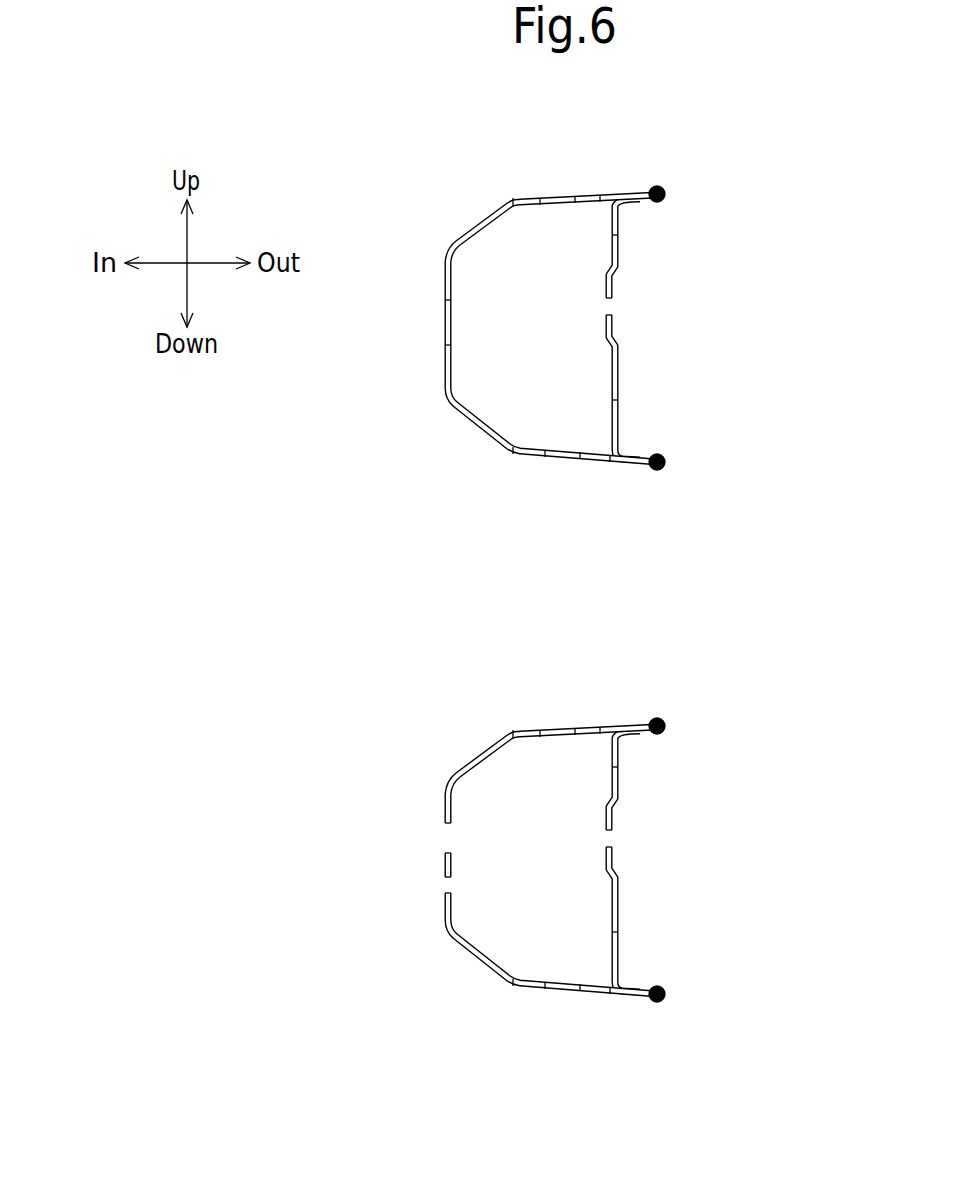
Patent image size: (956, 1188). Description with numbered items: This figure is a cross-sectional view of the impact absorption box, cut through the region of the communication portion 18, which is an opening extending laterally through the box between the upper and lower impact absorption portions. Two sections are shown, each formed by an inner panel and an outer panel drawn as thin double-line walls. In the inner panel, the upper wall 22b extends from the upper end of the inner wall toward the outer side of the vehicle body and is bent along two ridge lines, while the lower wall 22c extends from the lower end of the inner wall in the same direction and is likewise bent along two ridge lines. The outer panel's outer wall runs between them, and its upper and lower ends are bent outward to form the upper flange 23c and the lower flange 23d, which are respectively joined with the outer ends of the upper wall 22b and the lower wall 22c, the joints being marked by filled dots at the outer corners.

The communication portion 18 is at (563, 586).
The upper wall 22b is at (557, 201).
The lower wall 22c is at (575, 995).
The upper flange 23c is at (633, 202).
The lower flange 23d is at (630, 985).